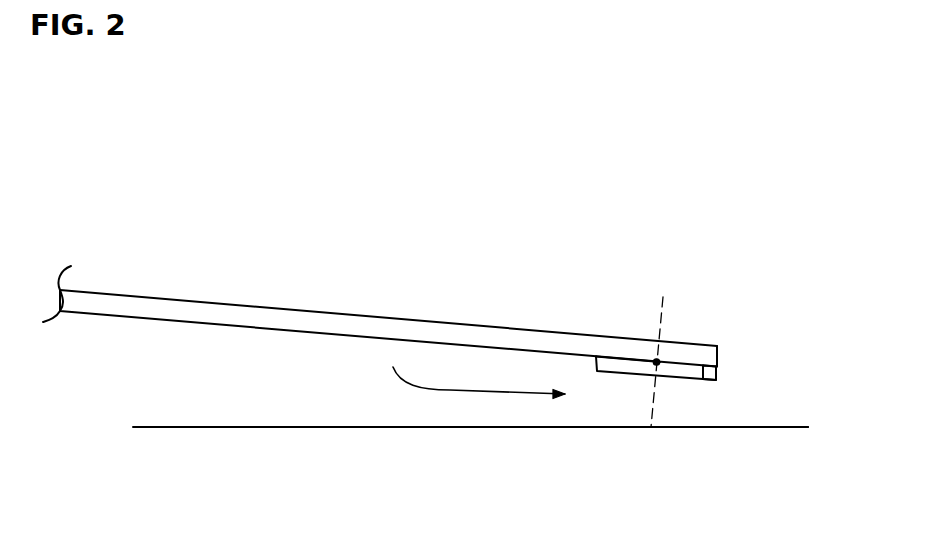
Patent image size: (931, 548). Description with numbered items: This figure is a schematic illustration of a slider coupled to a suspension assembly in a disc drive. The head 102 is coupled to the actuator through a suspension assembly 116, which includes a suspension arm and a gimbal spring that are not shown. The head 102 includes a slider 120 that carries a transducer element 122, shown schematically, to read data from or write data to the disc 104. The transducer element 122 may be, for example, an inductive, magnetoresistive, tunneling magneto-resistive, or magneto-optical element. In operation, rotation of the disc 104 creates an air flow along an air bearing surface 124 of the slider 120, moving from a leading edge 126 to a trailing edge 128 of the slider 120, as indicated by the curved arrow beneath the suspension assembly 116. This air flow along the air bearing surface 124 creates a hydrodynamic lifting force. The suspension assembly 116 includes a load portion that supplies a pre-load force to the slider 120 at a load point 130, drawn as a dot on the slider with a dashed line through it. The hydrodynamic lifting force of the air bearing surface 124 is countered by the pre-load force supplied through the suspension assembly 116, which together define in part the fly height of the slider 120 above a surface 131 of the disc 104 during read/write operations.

The head 102 is at (682, 361).
The disc 104 is at (767, 419).
The suspension assembly 116 is at (428, 320).
The slider 120 is at (615, 365).
The transducer element 122 is at (708, 370).
The air bearing surface 124 is at (625, 373).
The leading edge 126 is at (596, 358).
The trailing edge 128 is at (712, 374).
The load point 130 is at (656, 361).
The surface of the disc 131 is at (790, 427).